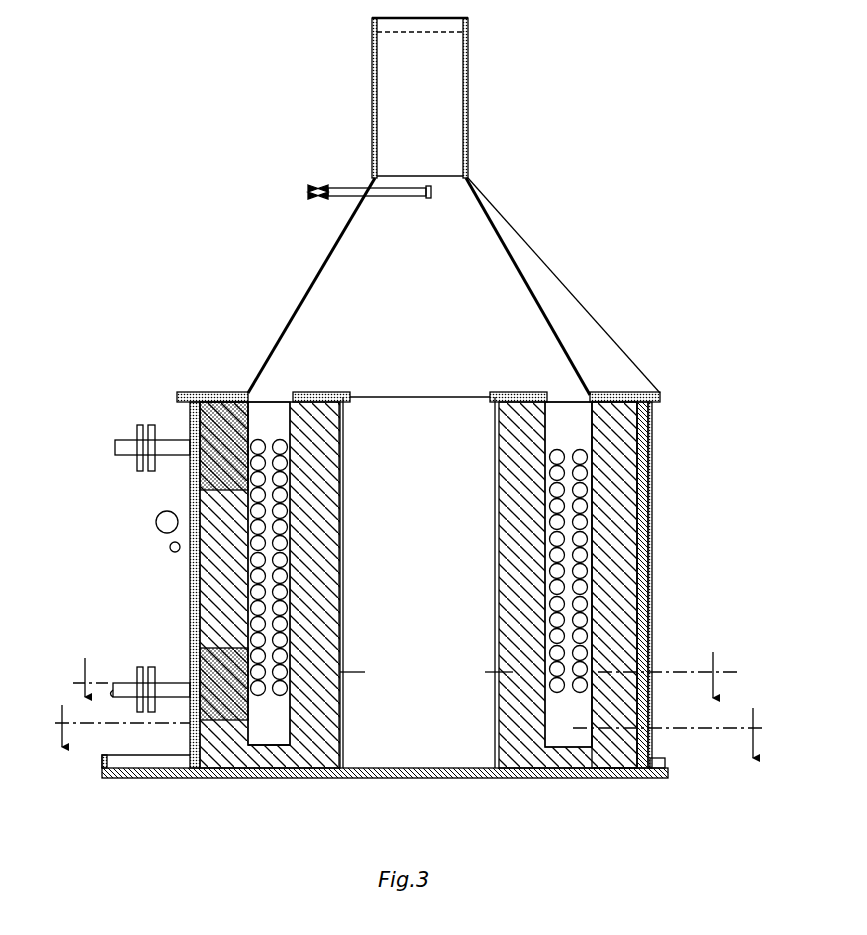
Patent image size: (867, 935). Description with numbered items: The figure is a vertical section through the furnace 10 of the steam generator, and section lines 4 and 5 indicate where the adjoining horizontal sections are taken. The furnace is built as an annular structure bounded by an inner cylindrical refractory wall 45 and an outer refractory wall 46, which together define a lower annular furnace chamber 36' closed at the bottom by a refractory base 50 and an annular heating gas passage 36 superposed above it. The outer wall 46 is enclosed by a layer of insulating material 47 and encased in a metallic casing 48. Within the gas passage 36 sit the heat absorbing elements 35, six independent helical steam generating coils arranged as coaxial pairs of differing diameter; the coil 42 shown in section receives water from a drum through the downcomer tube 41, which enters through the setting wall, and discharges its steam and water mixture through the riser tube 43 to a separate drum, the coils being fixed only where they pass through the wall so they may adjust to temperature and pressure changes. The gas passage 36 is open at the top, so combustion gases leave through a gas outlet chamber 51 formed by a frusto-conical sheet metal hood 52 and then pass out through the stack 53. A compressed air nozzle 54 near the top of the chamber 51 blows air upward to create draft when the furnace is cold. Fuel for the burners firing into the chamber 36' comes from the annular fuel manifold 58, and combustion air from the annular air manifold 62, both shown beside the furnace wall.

The furnace 10 is at (190, 575).
The heat absorbing elements 35 is at (580, 449).
The annular heating gas passage 36 is at (420, 551).
The annular furnace chamber 36' is at (318, 721).
The downcomer tube 41 is at (127, 697).
The coil 42 is at (266, 434).
The riser tube 43 is at (122, 446).
The inner cylindrical refractory wall 45 is at (315, 573).
The outer refractory wall 46 is at (617, 590).
The layer of insulating material 47 is at (647, 462).
The metallic casing 48 is at (651, 527).
The refractory base 50 is at (578, 762).
The gas outlet chamber 51 is at (421, 309).
The frusto-conical sheet metal hood 52 is at (523, 278).
The stack 53 is at (436, 78).
The compressed air nozzle 54 is at (432, 192).
The annular fuel manifold 58 is at (170, 545).
The annular air manifold 62 is at (156, 517).
The section line 4- 4 is at (405, 664).
The section line 5- 5 is at (406, 719).